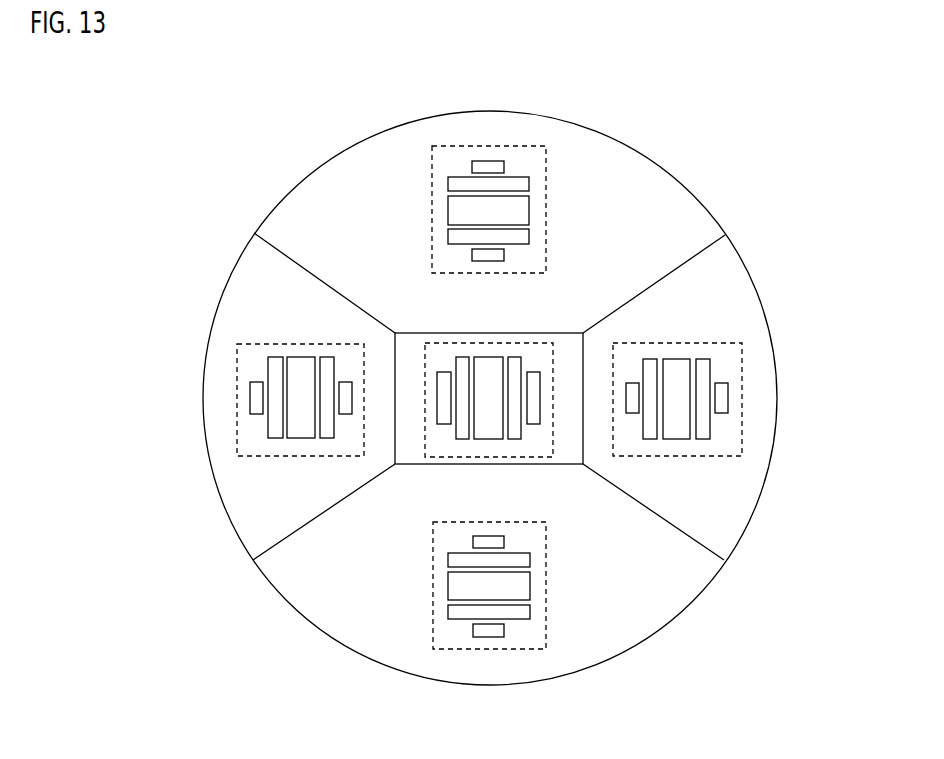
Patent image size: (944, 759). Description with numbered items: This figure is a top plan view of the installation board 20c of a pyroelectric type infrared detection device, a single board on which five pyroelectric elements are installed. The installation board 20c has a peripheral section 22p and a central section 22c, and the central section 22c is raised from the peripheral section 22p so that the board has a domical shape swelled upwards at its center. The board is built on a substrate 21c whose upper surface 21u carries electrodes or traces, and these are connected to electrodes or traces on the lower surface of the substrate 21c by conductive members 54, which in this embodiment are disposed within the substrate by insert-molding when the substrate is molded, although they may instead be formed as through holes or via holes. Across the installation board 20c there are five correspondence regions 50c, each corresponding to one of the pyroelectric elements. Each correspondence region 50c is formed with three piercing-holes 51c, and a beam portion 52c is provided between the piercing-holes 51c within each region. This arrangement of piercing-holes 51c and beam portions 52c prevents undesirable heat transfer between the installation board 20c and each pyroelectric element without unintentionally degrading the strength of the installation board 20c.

The installation board 20c is at (665, 148).
The upper surface 21u is at (318, 196).
The substrate 21c is at (742, 287).
The central section 22c is at (567, 343).
The peripheral section 22p is at (328, 590).
The correspondence region 50c is at (487, 145).
The piercing-hole 51c is at (372, 290).
The beam portion 52c is at (284, 426).
The conductive member 54 is at (349, 397).